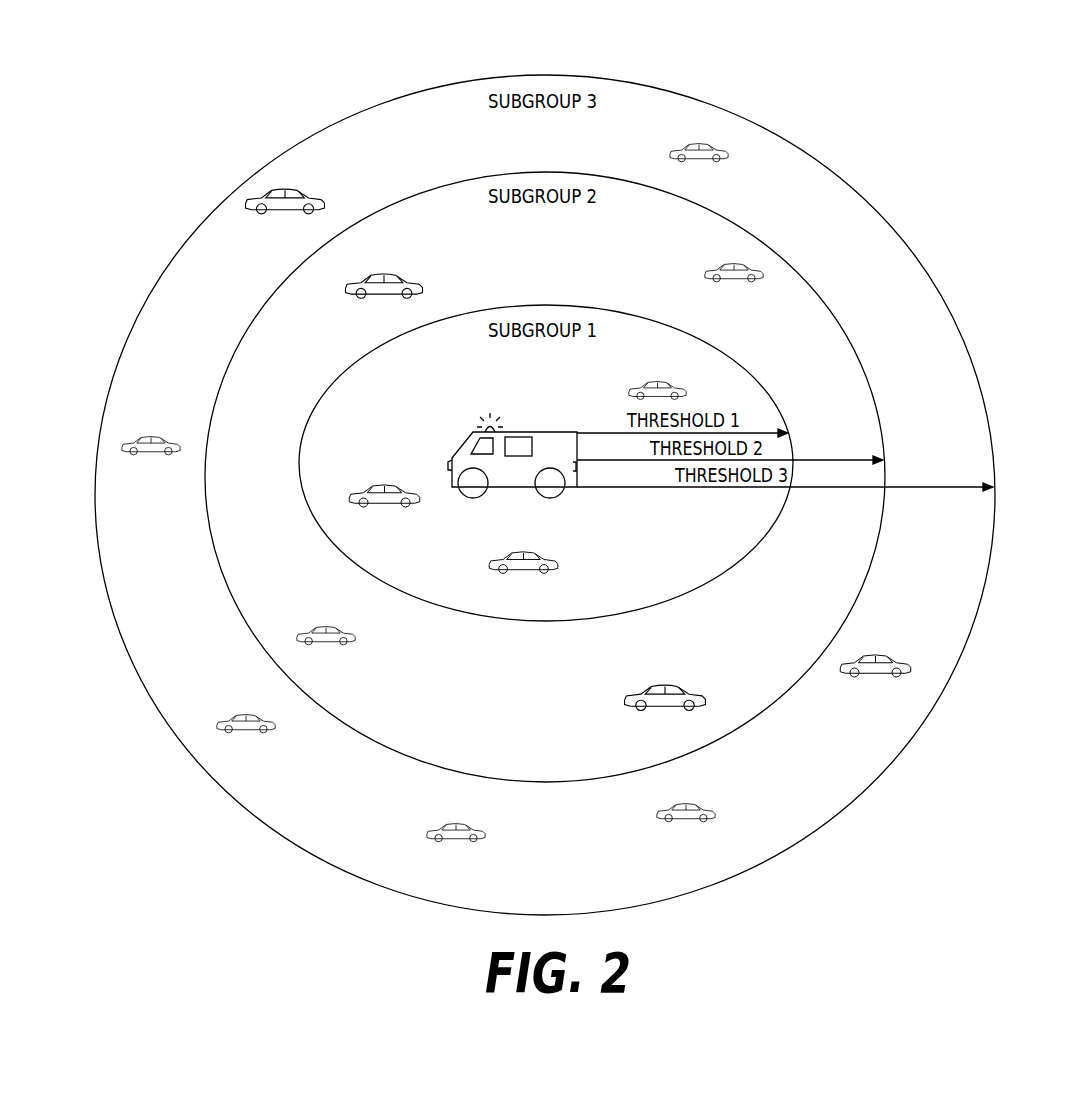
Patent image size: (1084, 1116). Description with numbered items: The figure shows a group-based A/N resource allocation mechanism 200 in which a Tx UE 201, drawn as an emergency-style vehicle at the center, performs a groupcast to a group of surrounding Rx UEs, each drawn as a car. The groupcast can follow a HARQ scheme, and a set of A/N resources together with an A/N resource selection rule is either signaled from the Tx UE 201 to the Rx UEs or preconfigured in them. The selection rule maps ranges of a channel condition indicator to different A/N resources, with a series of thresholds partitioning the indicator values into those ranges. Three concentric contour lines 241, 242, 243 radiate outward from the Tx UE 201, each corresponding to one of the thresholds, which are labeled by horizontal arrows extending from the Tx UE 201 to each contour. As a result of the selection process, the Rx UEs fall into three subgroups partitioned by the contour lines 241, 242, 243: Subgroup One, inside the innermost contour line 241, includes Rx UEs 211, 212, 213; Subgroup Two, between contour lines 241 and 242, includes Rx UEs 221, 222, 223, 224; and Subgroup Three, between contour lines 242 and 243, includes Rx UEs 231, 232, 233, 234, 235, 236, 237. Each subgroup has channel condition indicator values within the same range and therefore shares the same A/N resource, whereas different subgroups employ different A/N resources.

The group-based A/N resource allocation mechanism 200 is at (926, 118).
The Tx UE 201 is at (468, 450).
The Rx UE 211 is at (665, 382).
The Rx UE 212 is at (523, 552).
The Rx UE 213 is at (375, 487).
The Rx UE 221 is at (757, 282).
The Rx UE 222 is at (662, 683).
The Rx UE 223 is at (322, 627).
The Rx UE 224 is at (400, 272).
The Rx UE 231 is at (727, 160).
The Rx UE 232 is at (868, 678).
The Rx UE 233 is at (688, 822).
The Rx UE 234 is at (455, 825).
The Rx UE 235 is at (250, 733).
The Rx UE 236 is at (147, 455).
The Rx UE 237 is at (316, 191).
The contour line 241 is at (762, 540).
The contour line 242 is at (874, 555).
The contour line 243 is at (990, 555).